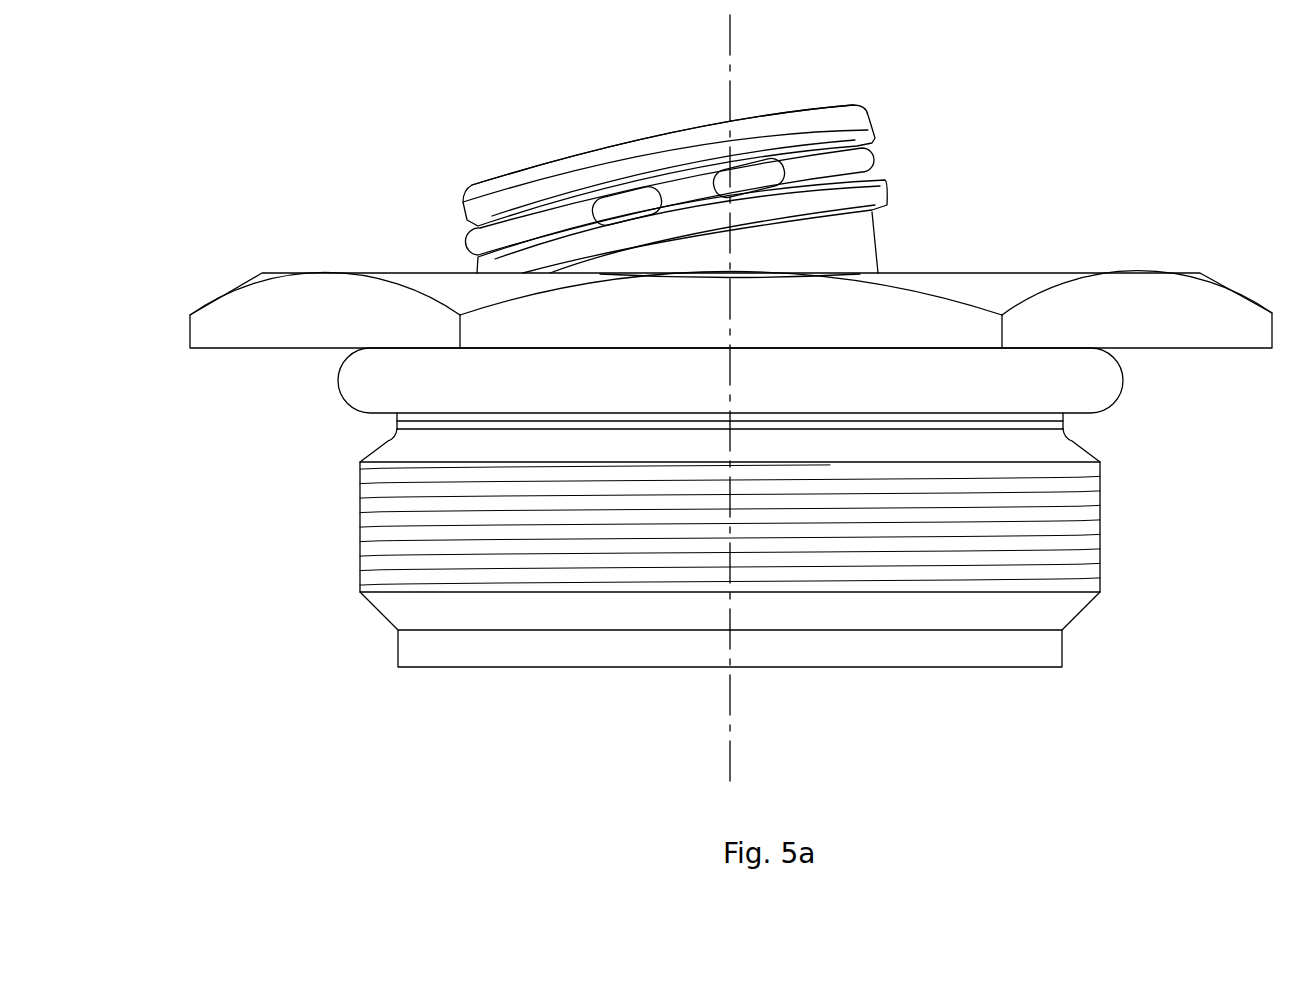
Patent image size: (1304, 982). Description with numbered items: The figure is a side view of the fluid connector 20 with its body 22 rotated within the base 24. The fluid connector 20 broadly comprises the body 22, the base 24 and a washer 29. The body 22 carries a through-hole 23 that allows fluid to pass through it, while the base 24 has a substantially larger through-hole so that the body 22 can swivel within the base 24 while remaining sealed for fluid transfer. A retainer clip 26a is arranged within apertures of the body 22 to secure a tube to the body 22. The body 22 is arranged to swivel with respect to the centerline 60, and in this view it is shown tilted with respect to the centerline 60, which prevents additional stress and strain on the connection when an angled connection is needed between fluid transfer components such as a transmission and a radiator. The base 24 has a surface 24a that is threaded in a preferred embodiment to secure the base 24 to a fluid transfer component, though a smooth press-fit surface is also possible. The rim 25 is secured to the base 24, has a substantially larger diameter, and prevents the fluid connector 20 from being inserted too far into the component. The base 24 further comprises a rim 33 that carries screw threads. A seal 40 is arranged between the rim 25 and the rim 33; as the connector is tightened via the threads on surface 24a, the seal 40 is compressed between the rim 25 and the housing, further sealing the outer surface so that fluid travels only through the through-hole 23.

The fluid connector 20 is at (731, 400).
The body 22 is at (747, 151).
The through-hole 23 is at (665, 113).
The base 24 is at (667, 593).
The surface 24a is at (360, 492).
The rim 25 is at (731, 274).
The retainer clip 26a is at (748, 200).
The washer 29 is at (628, 667).
The rim 33 is at (788, 460).
The seal 40 is at (797, 395).
The centerline 60 is at (735, 72).